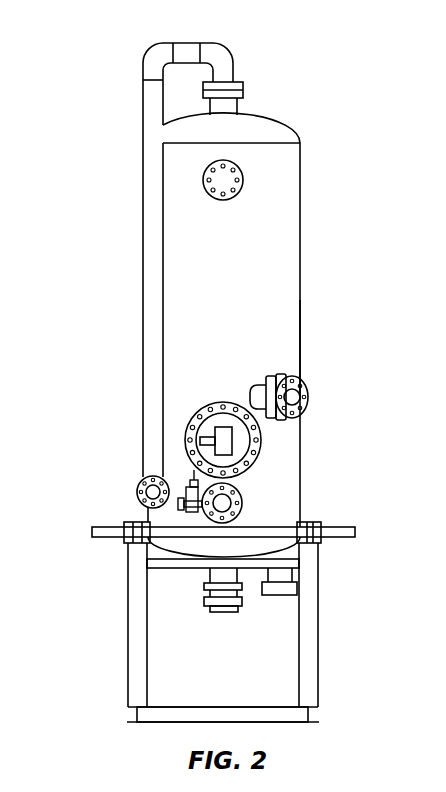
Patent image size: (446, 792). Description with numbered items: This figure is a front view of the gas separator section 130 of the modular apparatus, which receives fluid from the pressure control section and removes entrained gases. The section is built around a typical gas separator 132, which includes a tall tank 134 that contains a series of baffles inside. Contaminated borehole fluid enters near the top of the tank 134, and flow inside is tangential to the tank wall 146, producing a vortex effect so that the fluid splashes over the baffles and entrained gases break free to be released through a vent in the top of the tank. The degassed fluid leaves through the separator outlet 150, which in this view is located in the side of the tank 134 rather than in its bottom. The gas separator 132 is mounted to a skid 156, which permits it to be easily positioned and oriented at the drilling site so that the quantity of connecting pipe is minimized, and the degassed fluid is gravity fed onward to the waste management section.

The gas separator section 130 is at (130, 42).
The gas separator 132 is at (283, 187).
The tank 134 is at (283, 237).
The tank wall 146 is at (243, 337).
The separator outlet 150 is at (244, 502).
The skid 156 is at (308, 639).